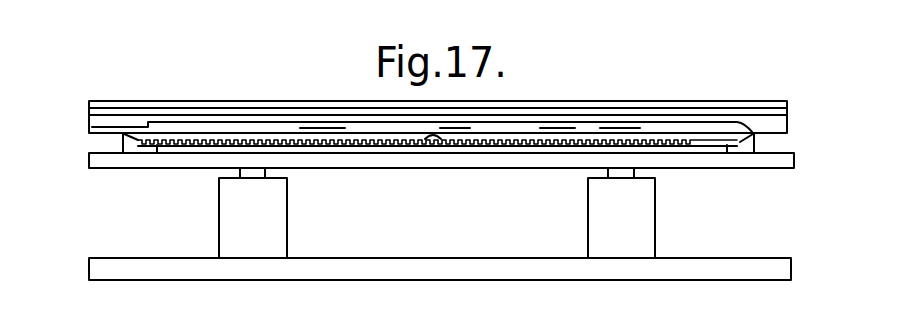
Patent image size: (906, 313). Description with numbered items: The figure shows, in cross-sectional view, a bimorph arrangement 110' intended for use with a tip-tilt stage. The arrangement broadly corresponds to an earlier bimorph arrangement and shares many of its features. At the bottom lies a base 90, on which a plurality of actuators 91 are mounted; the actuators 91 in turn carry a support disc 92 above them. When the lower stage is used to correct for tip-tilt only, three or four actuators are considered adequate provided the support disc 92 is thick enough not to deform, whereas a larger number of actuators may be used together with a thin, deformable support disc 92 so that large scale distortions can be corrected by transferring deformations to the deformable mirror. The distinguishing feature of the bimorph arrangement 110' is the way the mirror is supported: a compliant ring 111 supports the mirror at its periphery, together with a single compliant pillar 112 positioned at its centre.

The bimorph arrangement 110' is at (436, 81).
The compliant ring 111 is at (122, 147).
The compliant pillar 112 is at (455, 148).
The support disc 92 is at (787, 161).
The actuator 91 is at (230, 207).
The base 90 is at (782, 270).